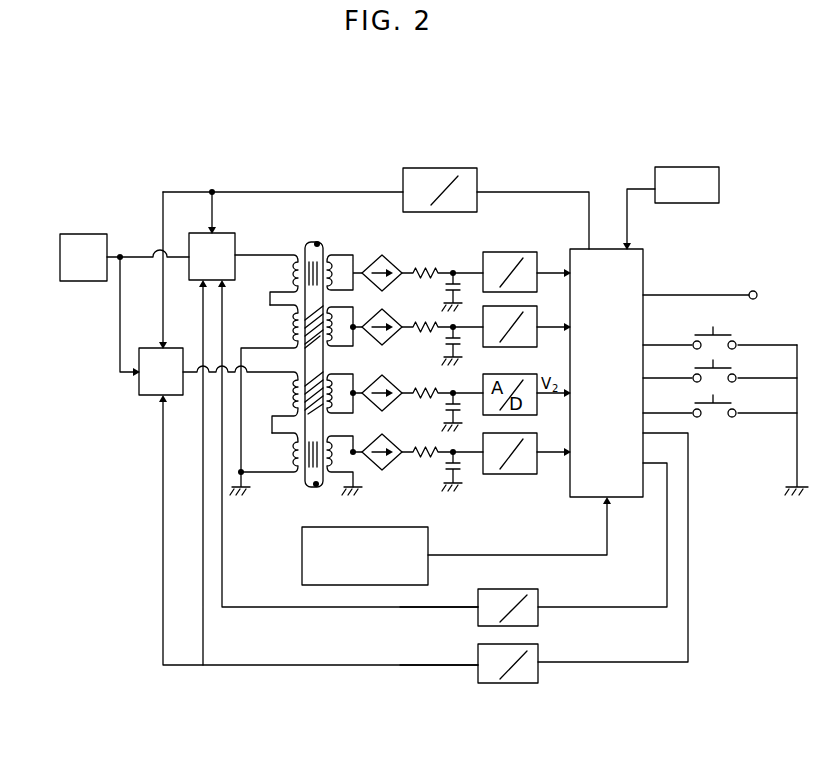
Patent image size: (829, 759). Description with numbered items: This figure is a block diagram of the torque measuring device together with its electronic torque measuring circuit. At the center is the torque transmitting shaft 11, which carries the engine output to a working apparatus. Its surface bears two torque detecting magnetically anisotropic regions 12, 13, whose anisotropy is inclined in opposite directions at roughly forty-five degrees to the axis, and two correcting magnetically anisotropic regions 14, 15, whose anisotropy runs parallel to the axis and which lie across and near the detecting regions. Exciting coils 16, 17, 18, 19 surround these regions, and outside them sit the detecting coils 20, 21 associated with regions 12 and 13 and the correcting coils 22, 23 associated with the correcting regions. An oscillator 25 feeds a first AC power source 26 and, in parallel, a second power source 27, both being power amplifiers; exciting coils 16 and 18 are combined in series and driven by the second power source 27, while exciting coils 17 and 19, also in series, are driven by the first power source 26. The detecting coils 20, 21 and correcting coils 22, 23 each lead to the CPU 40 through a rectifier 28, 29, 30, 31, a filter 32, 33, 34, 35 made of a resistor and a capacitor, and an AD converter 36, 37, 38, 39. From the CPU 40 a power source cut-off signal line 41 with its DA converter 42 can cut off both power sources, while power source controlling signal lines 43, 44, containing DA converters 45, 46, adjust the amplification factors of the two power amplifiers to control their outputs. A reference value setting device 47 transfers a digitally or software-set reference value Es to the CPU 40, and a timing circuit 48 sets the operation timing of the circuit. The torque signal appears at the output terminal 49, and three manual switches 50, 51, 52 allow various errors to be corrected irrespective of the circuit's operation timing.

The torque transmitting shaft 11 is at (313, 243).
The torque detecting magnetically anisotropic region 12 is at (315, 340).
The torque detecting magnetically anisotropic region 13 is at (308, 381).
The correcting magnetically anisotropic region 14 is at (319, 245).
The correcting magnetically anisotropic region 15 is at (310, 484).
The exciting coil 16 is at (286, 326).
The exciting coil 17 is at (288, 397).
The exciting coil 18 is at (286, 275).
The exciting coil 19 is at (288, 447).
The detecting coil 20 is at (338, 320).
The detecting coil 21 is at (343, 405).
The correcting coil 22 is at (341, 269).
The correcting coil 23 is at (343, 479).
The oscillator 25 is at (93, 234).
The first AC power source 26 is at (142, 396).
The second power source 27 is at (234, 237).
The rectifier 28 is at (383, 271).
The rectifier 29 is at (397, 329).
The rectifier 30 is at (384, 383).
The rectifier 31 is at (384, 452).
The filter 32 is at (445, 272).
The filter 33 is at (454, 298).
The filter 34 is at (437, 378).
The filter 35 is at (440, 452).
The AD converter 36 is at (523, 252).
The AD converter 37 is at (460, 349).
The AD converter 38 is at (484, 346).
The AD converter 39 is at (500, 476).
The CPU 40 is at (643, 252).
The power source cut-off signal line 41 is at (343, 190).
The DA converter 42 is at (447, 168).
The power source controlling signal line 43 is at (452, 607).
The power source controlling signal line 44 is at (435, 663).
The DA converter 45 is at (518, 590).
The DA converter 46 is at (508, 683).
The reference value setting device 47 is at (394, 527).
The timing circuit 48 is at (688, 167).
The output terminal 49 is at (757, 293).
The manual switch 50 is at (720, 327).
The manual switch 51 is at (720, 360).
The manual switch 52 is at (720, 395).